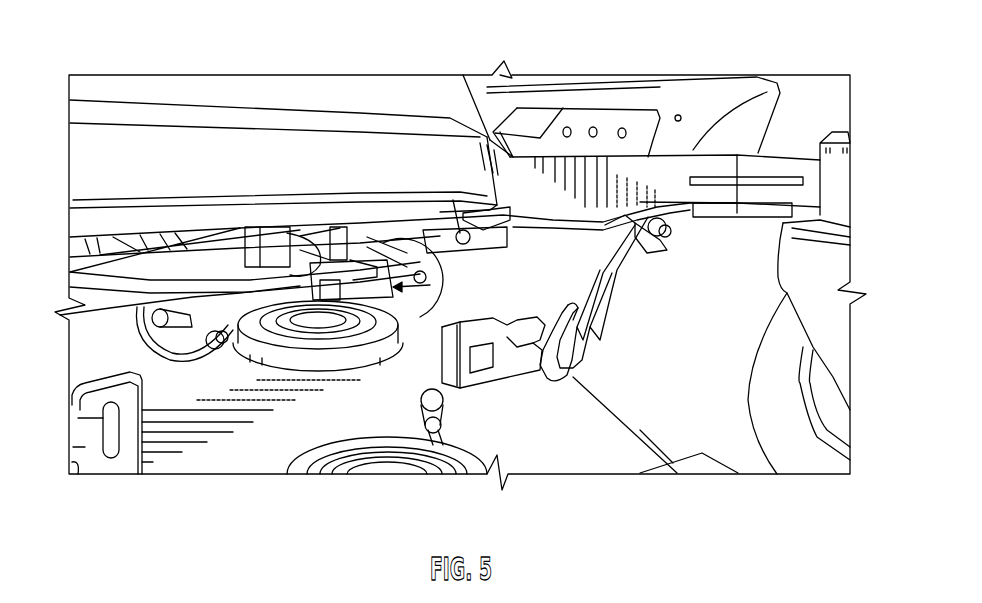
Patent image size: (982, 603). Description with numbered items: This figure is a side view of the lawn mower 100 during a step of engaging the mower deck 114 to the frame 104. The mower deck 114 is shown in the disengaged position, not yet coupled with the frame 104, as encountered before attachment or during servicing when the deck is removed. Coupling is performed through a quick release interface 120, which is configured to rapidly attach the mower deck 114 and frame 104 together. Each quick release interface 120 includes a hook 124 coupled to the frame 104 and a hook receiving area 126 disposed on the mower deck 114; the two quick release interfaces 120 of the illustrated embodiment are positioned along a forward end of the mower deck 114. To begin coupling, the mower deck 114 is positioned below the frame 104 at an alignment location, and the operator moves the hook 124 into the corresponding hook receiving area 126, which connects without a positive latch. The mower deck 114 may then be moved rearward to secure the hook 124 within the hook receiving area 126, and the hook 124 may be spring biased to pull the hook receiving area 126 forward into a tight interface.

The lawn mower 100 is at (177, 132).
The frame 104 is at (672, 170).
The mower deck 114 is at (618, 440).
The quick release interface 120 is at (605, 337).
The hook 124 is at (573, 312).
The hook receiving area 126 is at (525, 363).